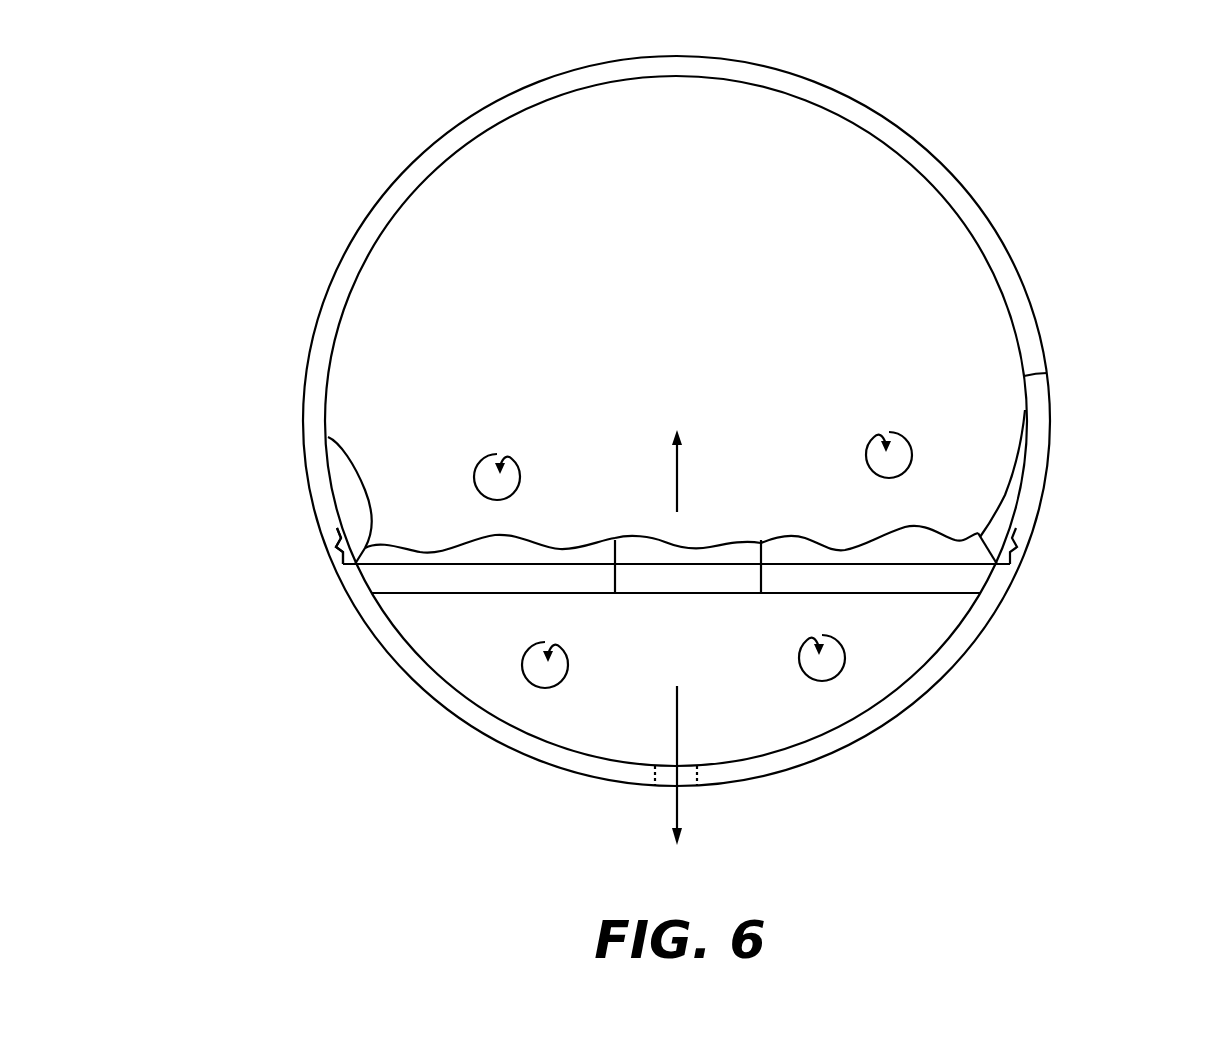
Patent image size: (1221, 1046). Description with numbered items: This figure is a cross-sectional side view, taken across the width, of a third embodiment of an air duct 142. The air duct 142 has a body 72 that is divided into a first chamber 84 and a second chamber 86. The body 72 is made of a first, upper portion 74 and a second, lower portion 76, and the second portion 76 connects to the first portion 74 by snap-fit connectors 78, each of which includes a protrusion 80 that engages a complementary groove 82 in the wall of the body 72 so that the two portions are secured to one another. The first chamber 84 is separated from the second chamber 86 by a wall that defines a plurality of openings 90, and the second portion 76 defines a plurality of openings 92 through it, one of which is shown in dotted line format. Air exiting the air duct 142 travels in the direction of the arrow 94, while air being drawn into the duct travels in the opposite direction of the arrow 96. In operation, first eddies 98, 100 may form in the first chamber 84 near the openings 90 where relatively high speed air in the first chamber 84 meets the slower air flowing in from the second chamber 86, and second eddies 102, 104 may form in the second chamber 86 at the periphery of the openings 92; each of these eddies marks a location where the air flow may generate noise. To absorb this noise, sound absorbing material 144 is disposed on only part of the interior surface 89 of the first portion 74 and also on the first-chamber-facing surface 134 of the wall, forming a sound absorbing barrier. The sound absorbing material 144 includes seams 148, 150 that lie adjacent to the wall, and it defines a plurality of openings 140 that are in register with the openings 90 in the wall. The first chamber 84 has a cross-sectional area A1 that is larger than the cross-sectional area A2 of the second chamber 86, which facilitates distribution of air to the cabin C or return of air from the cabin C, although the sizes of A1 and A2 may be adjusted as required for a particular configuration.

The body 72 is at (859, 96).
The first portion 74 is at (1016, 292).
The second portion 76 is at (904, 712).
The snap-fit connector 78 is at (331, 557).
The protrusion 80 is at (585, 524).
The groove 82 is at (341, 533).
The first chamber 84 is at (665, 296).
The second chamber 86 is at (500, 703).
The interior surface 89 is at (1050, 374).
The openings 90 is at (730, 593).
The openings 92 is at (688, 785).
The arrow 94 is at (676, 814).
The arrow 96 is at (677, 466).
The first eddy 98 is at (876, 456).
The first eddy 100 is at (522, 476).
The second eddy 102 is at (805, 680).
The second eddy 104 is at (570, 667).
The first-chamber-facing surface 134 is at (835, 553).
The openings 140 is at (730, 550).
The air duct 142 is at (1060, 88).
The sound absorbing material 144 is at (340, 468).
The seam 148 is at (978, 533).
The seam 150 is at (375, 545).
The cross-sectional area A1 is at (958, 273).
The cross-sectional area A2 is at (432, 638).
The cabin C is at (432, 866).